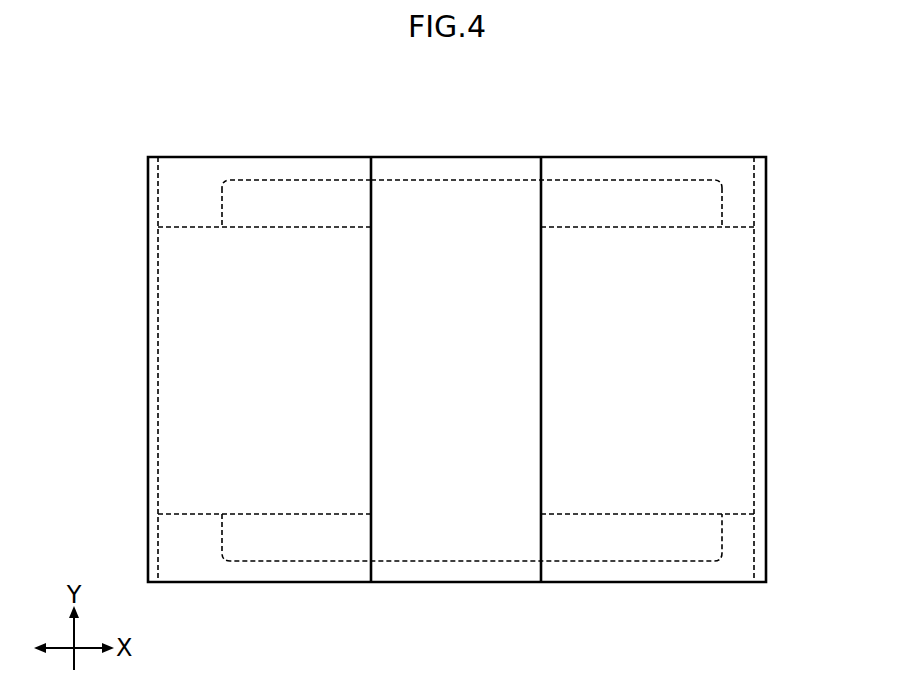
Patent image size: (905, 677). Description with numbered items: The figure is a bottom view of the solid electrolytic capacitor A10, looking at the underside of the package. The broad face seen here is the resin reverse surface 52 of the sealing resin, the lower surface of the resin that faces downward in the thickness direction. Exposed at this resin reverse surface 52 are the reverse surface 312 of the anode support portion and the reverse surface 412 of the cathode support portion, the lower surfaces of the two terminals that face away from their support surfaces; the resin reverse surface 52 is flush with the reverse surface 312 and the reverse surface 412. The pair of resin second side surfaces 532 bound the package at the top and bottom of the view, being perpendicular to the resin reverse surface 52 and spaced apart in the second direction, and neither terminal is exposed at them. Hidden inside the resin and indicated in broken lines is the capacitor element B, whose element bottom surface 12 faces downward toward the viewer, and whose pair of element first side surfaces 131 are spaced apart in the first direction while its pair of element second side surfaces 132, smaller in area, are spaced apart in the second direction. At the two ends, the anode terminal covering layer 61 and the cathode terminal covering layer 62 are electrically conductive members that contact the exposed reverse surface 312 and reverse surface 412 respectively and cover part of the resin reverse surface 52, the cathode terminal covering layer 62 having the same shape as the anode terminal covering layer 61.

The solid electrolytic capacitor A10 is at (182, 140).
The capacitor element B is at (311, 170).
The element bottom surface 12 is at (685, 218).
The element first side surfaces 131 is at (222, 205).
The element second side surfaces 132 is at (583, 177).
The reverse surface 312 is at (278, 360).
The reverse surface 412 is at (637, 368).
The resin reverse surface 52 is at (427, 457).
The resin second side surfaces 532 is at (457, 157).
The anode terminal covering layer 61 is at (198, 542).
The cathode terminal covering layer 62 is at (735, 538).